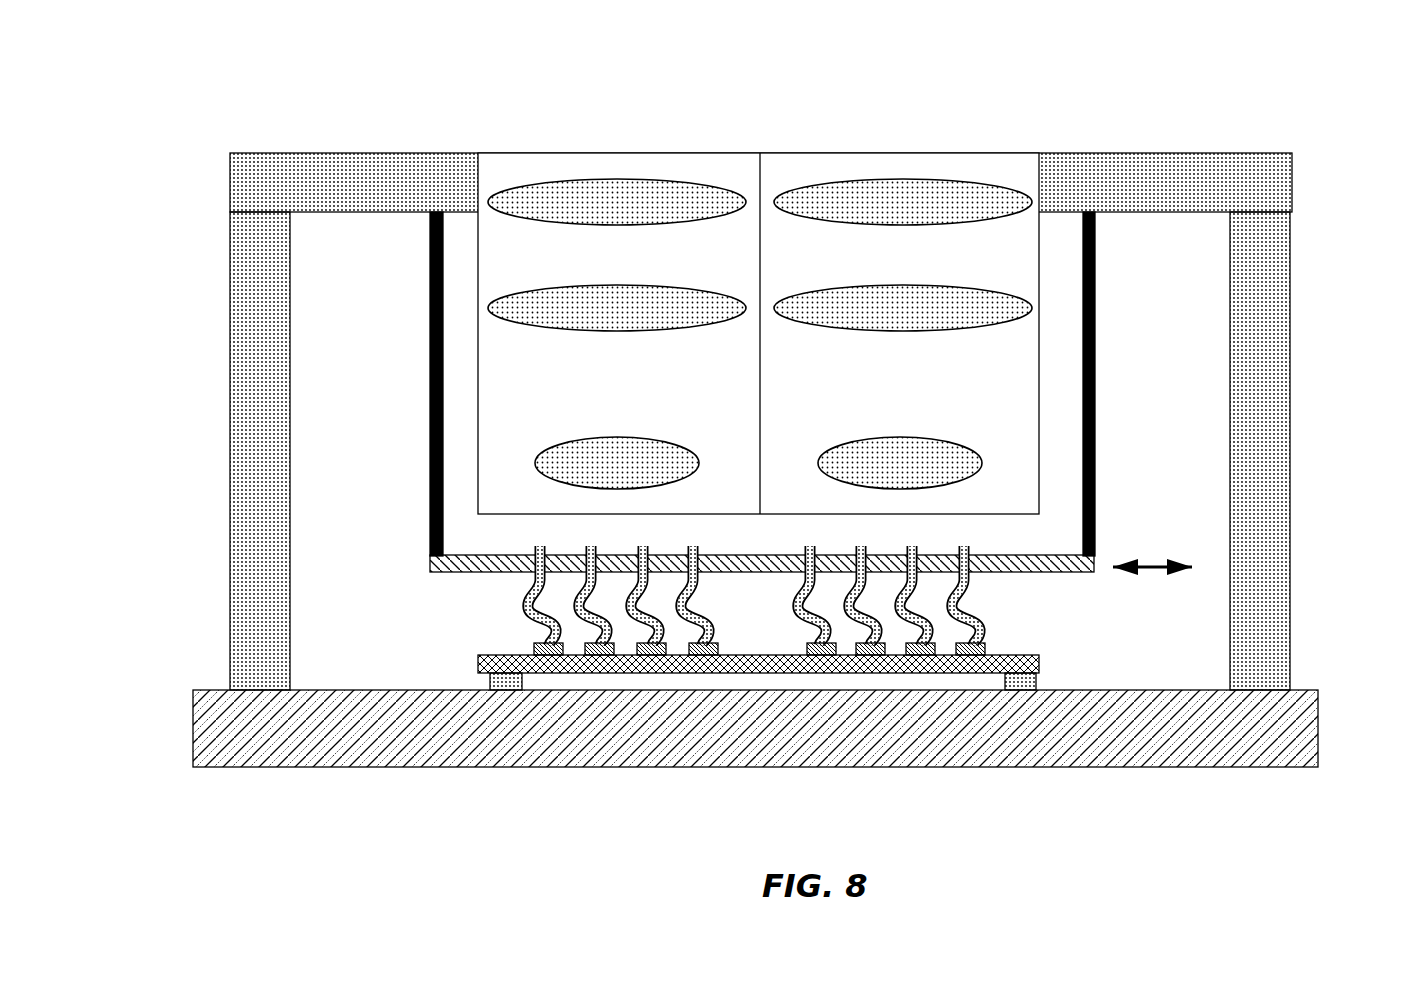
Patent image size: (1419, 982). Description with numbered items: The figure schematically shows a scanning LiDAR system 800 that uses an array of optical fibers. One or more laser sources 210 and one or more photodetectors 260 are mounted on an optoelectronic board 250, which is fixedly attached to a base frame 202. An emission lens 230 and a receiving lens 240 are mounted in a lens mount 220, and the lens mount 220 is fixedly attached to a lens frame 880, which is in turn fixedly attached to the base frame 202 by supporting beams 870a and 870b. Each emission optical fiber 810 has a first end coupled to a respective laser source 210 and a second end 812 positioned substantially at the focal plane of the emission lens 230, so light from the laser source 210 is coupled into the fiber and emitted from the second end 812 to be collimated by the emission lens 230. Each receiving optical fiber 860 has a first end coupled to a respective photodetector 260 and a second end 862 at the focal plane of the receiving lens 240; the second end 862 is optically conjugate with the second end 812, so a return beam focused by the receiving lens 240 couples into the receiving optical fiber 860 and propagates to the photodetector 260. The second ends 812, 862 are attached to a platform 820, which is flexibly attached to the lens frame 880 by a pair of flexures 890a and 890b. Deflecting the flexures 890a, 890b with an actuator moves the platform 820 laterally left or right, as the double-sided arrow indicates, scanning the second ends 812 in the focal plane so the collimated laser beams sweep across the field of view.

The scanning LiDAR system 800 is at (326, 86).
The base frame 202 is at (1278, 732).
The lens frame 880 is at (1228, 178).
The supporting beam 870a is at (1270, 578).
The supporting beam 870b is at (260, 450).
The flexure 890a is at (1095, 383).
The flexure 890b is at (430, 425).
The platform 820 is at (1048, 574).
The lens mount 220 is at (995, 155).
The receiving lens 240 is at (630, 203).
The emission lens 230 is at (892, 203).
The receiving optical fiber 860 is at (527, 585).
The second end of receiving optical fiber 862 is at (536, 547).
The emission optical fiber 810 is at (854, 584).
The second end of emission optical fiber 812 is at (806, 547).
The photodetector 260 is at (538, 645).
The laser source 210 is at (820, 648).
The optoelectronic board 250 is at (1040, 668).